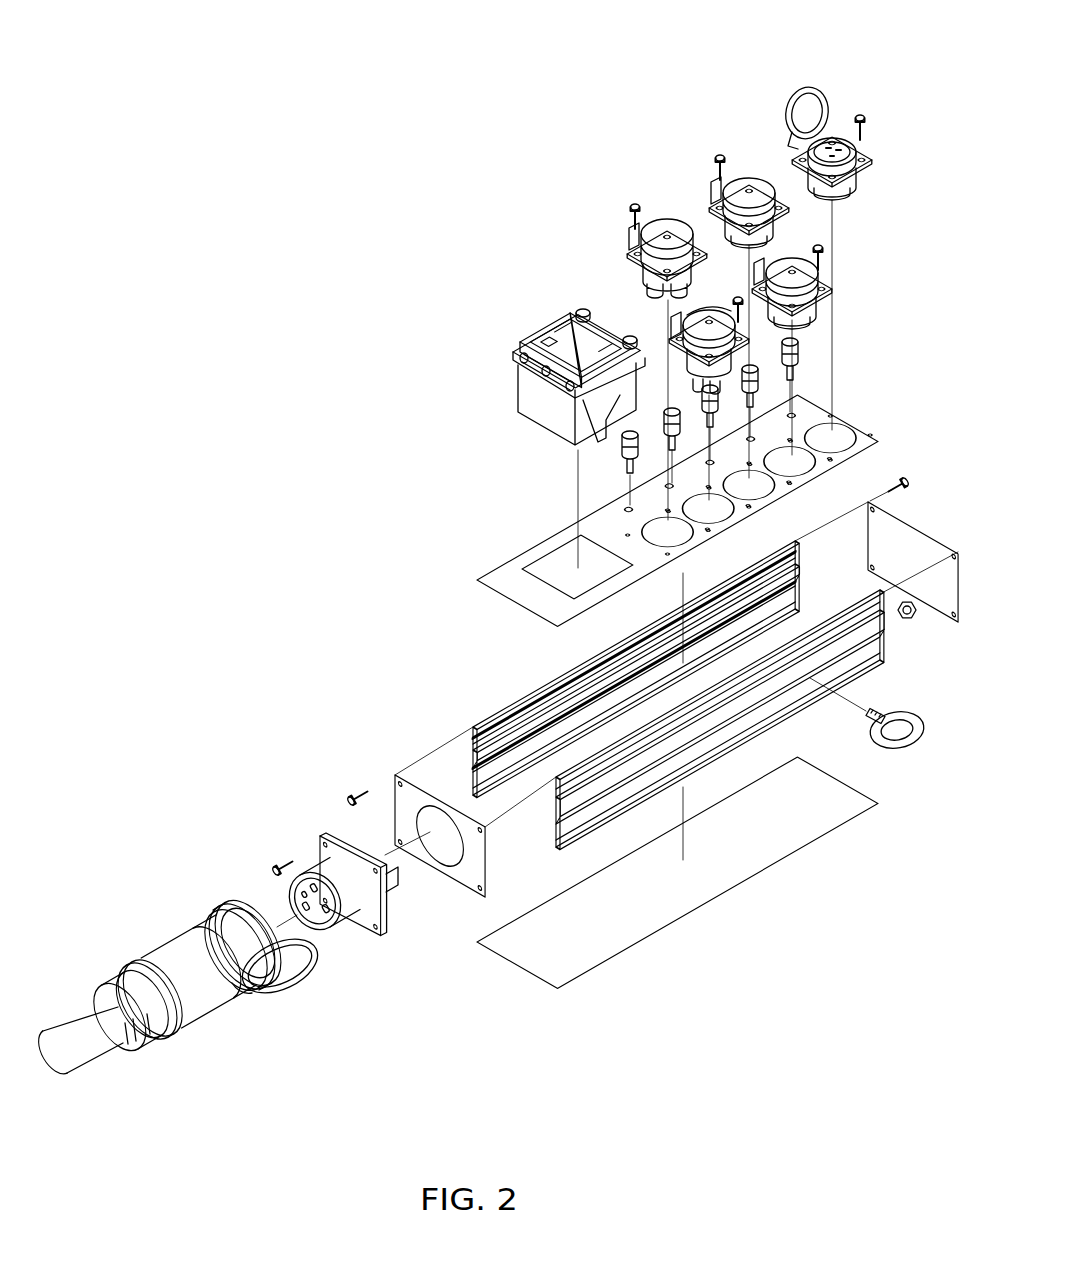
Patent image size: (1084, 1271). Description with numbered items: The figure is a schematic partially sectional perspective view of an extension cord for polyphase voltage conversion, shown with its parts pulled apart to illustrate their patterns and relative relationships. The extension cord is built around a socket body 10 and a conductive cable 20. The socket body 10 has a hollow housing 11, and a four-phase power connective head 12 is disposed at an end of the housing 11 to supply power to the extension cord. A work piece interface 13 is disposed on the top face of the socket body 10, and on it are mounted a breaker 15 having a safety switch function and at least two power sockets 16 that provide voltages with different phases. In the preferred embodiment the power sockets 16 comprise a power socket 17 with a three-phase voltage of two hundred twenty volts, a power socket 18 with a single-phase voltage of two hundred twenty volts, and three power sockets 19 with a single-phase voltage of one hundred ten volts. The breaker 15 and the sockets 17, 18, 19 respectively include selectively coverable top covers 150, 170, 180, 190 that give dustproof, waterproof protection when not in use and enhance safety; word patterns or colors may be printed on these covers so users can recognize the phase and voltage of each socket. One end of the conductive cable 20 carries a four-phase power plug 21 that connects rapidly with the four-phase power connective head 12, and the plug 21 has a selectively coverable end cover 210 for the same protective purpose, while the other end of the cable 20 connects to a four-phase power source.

The socket body 10 is at (476, 451).
The hollow housing 11 is at (512, 704).
The four-phase power connective head 12 is at (331, 865).
The work piece interface 13 is at (504, 575).
The breaker 15 is at (527, 392).
The top cover 150 is at (556, 330).
The power sockets 16 is at (775, 77).
The power socket with a three-phase voltage of 220 V 17 is at (628, 246).
The top cover 170 is at (668, 233).
The power socket with a single-phase voltage of 220 V 18 is at (740, 344).
The top cover 180 is at (700, 325).
The power socket with a single-phase voltage of 110 V 19 is at (868, 172).
The top cover 190 is at (815, 103).
The conductive cable 20 is at (70, 1035).
The four-phase power plug 21 is at (186, 945).
The end cover 210 is at (296, 990).